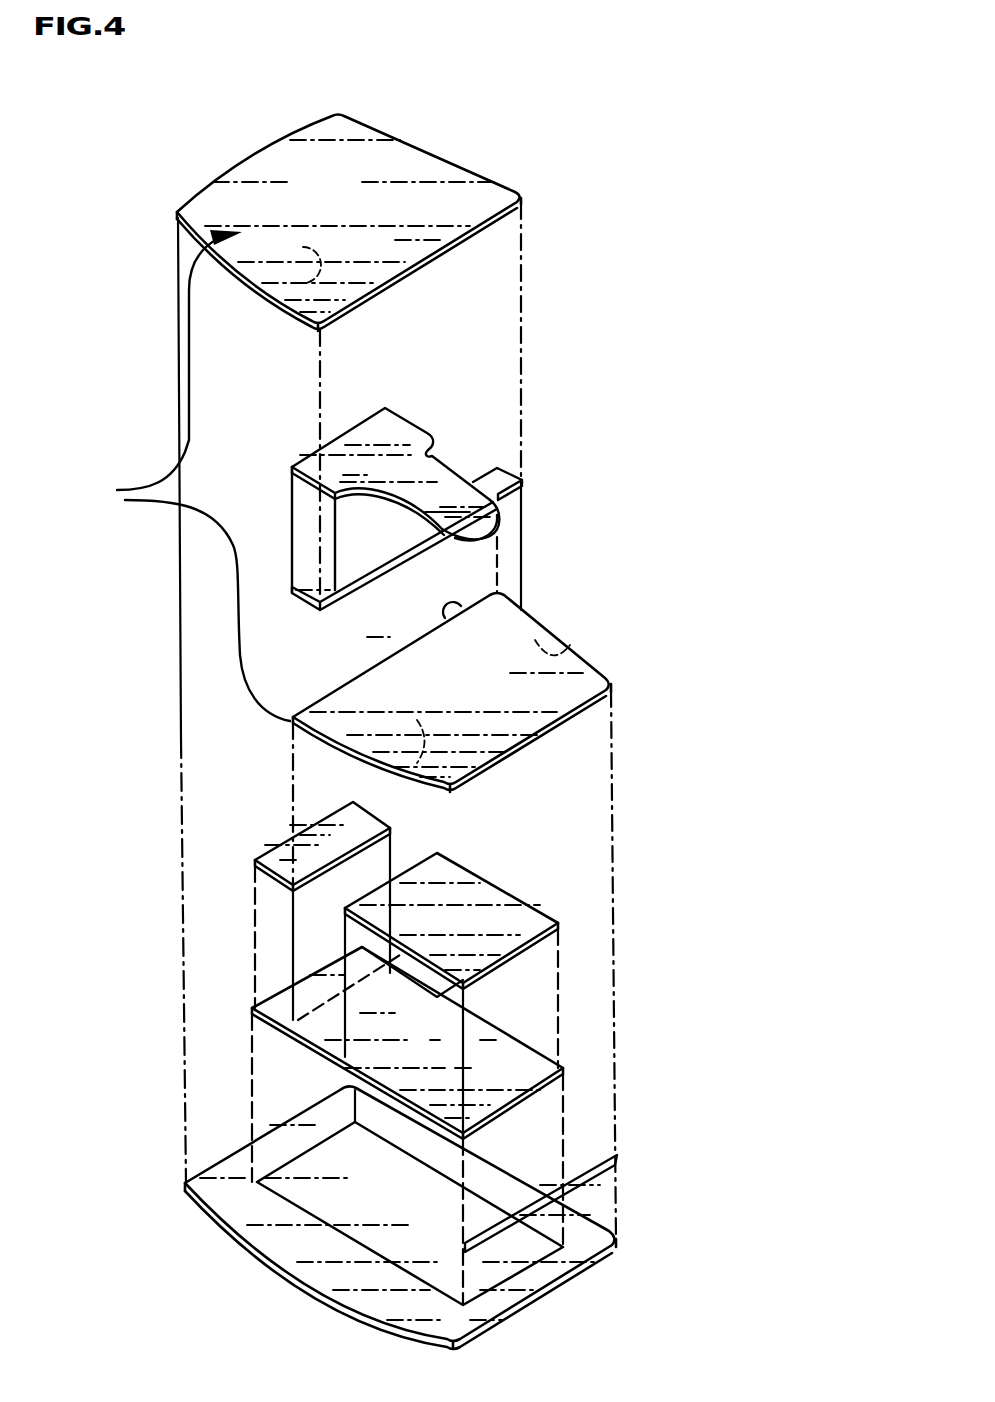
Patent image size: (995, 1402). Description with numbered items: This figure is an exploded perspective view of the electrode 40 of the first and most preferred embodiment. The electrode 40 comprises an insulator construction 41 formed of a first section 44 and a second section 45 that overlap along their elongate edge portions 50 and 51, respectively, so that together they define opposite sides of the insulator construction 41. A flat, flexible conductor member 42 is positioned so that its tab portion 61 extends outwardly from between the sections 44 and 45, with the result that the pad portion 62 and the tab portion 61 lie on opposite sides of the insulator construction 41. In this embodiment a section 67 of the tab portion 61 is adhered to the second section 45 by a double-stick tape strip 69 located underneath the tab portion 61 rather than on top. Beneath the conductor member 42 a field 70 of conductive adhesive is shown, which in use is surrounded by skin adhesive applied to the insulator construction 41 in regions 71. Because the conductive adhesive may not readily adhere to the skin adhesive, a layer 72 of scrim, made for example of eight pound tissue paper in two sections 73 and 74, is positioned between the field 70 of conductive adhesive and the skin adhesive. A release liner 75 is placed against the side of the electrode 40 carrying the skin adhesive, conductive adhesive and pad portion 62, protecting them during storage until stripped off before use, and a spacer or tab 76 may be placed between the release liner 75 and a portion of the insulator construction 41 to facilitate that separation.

The electrode 40 is at (578, 297).
The insulator construction 41 is at (185, 475).
The conductor member 42 is at (395, 437).
The first section 44 is at (425, 163).
The second section 45 is at (578, 683).
The elongate edge portion 50 is at (425, 255).
The elongate edge portion 51 is at (455, 618).
The tab portion 61 is at (467, 492).
The pad portion 62 is at (363, 438).
The section of tab portion 67 is at (453, 500).
The double-stick tape strip 69 is at (500, 470).
The field of conductive adhesive 70 is at (515, 1080).
The regions of skin adhesive 71 is at (296, 296).
The layer of scrim 72 is at (358, 822).
The scrim section 73 is at (500, 923).
The scrim section 74 is at (328, 818).
The release liner 75 is at (356, 1310).
The spacer or tab 76 is at (603, 1168).